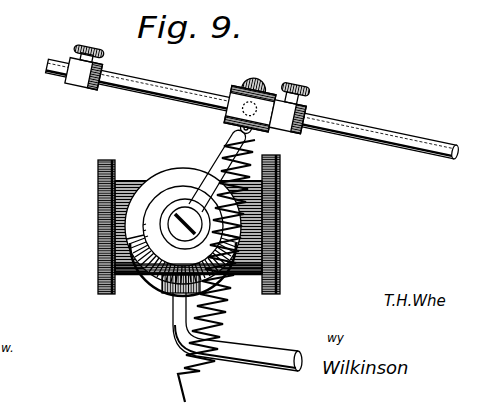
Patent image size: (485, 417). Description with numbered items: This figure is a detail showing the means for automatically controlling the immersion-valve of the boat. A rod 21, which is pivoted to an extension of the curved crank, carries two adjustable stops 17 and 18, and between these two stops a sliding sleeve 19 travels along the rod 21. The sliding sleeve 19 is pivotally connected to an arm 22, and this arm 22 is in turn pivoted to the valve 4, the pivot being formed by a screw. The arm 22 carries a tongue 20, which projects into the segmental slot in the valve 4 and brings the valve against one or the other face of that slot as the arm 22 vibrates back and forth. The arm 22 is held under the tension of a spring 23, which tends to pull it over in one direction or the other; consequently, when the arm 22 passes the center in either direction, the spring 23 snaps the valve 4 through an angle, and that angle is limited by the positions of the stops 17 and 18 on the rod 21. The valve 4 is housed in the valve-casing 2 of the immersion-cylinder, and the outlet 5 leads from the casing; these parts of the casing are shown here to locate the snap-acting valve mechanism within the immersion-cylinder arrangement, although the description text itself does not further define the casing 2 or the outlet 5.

The casing 2 is at (280, 233).
The valve 4 is at (141, 259).
The outlet spout 5 is at (267, 353).
The adjustable stop 17 is at (303, 107).
The adjustable stop 18 is at (82, 67).
The sliding sleeve 19 is at (243, 93).
The tongue 20 is at (148, 322).
The rod 21 is at (407, 140).
The arm 22 is at (168, 220).
The spring 23 is at (205, 368).